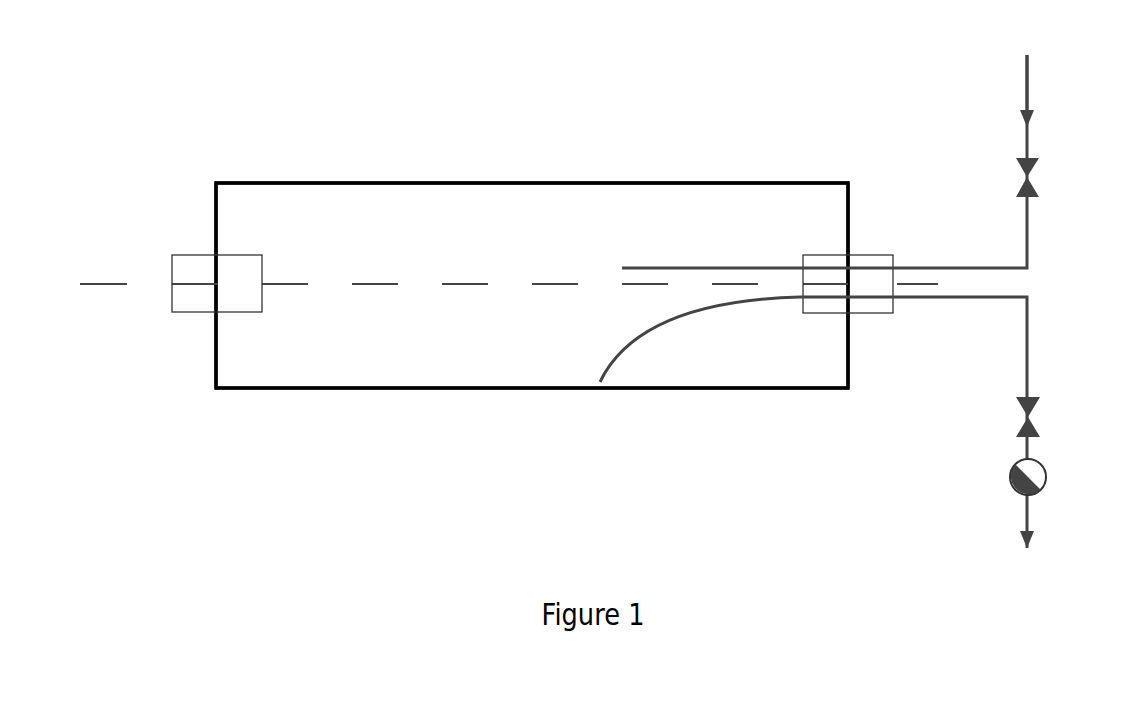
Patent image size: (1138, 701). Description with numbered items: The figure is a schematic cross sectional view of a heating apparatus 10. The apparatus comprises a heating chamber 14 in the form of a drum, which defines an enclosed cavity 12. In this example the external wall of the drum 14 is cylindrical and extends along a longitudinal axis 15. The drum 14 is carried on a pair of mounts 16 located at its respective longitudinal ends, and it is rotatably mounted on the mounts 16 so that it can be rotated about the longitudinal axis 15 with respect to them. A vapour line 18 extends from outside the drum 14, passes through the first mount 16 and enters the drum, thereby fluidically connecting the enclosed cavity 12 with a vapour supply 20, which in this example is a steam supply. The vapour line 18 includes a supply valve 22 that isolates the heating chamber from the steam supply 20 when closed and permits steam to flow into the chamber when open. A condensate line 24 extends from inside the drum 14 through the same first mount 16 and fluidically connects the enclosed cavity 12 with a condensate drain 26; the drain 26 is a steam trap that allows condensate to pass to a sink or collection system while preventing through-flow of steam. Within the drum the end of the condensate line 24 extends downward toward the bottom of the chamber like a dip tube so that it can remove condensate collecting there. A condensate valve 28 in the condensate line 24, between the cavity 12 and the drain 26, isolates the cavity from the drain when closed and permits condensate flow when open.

The heating apparatus 10 is at (152, 58).
The enclosed cavity 12 is at (435, 208).
The heating chamber 14 is at (600, 183).
The longitudinal axis 15 is at (107, 283).
The mounts 16 is at (203, 268).
The vapour line 18 is at (968, 265).
The vapour supply 20 is at (1025, 53).
The supply valve 22 is at (1030, 175).
The condensate line 24 is at (945, 300).
The condensate drain 26 is at (1048, 475).
The condensate valve 28 is at (1035, 415).